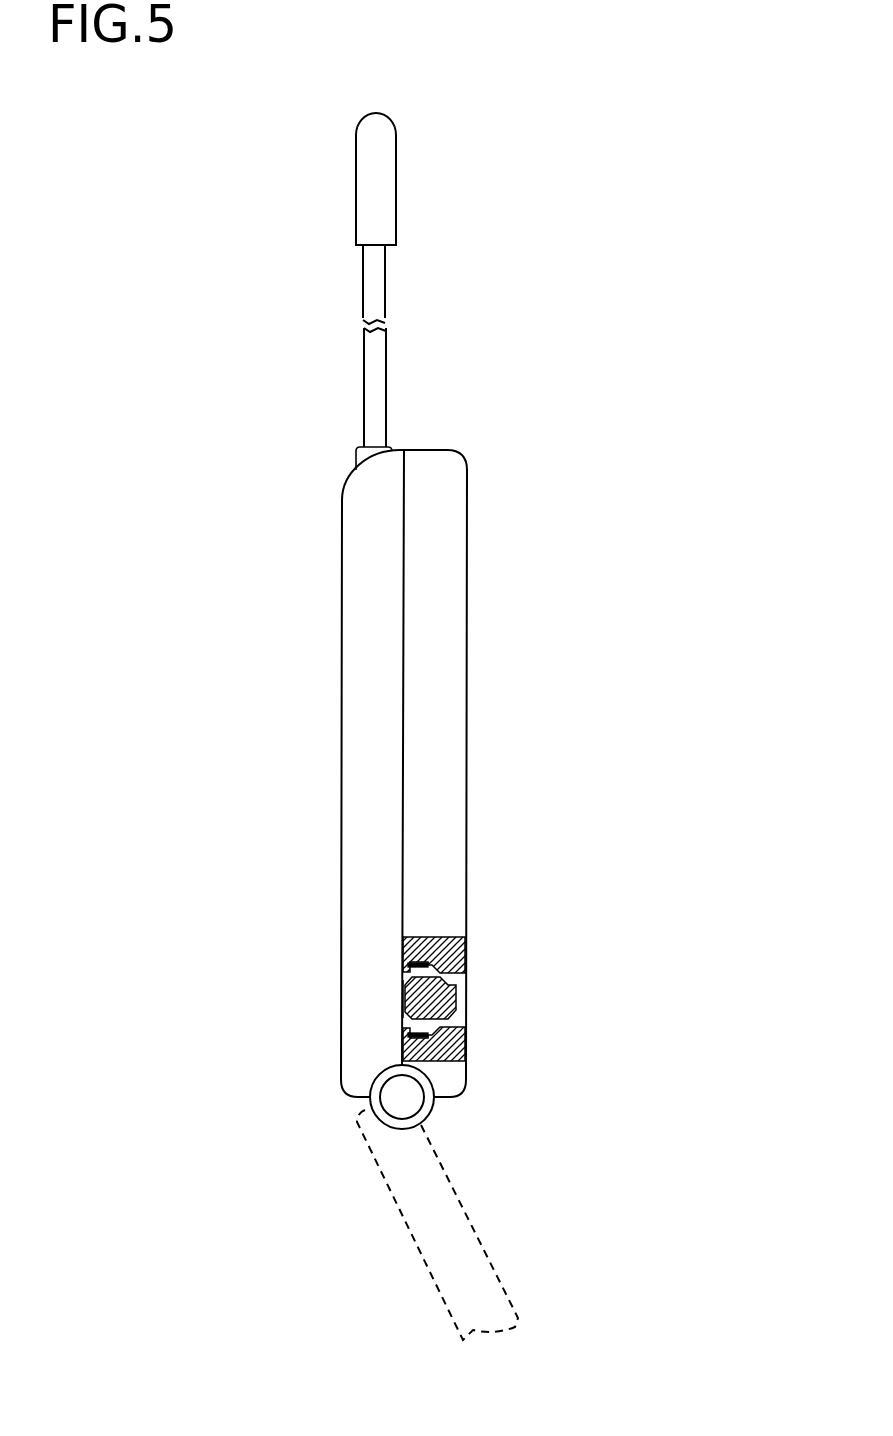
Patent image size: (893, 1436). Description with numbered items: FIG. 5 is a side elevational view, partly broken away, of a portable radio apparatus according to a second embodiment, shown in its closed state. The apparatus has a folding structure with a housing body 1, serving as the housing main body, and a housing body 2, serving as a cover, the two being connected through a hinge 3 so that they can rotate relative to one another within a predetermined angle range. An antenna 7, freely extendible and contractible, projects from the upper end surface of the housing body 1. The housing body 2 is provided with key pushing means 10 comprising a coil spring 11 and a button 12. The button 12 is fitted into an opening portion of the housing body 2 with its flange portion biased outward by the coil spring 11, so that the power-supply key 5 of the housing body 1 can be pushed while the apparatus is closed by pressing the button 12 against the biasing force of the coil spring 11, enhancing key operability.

The housing body 1 is at (358, 528).
The housing body 2 is at (468, 576).
The hinge 3 is at (372, 1103).
The power-supply key 5 is at (403, 996).
The antenna 7 is at (397, 183).
The key pushing means 10 is at (580, 1045).
The coil spring 11 is at (435, 936).
The button 12 is at (463, 1001).